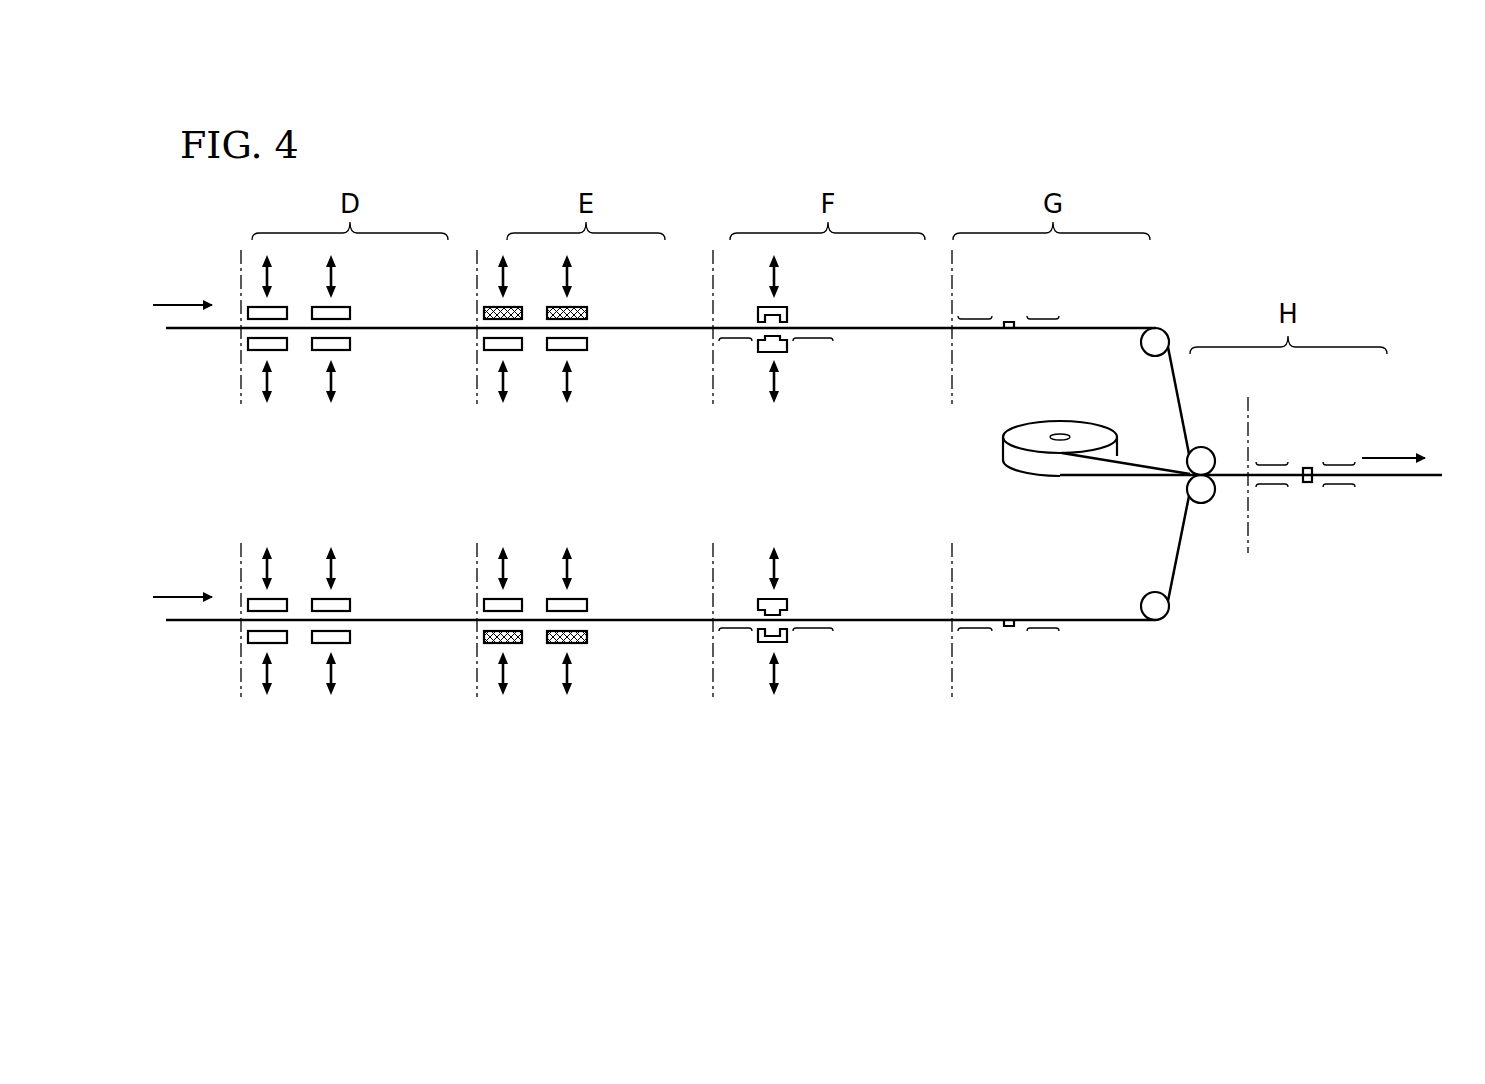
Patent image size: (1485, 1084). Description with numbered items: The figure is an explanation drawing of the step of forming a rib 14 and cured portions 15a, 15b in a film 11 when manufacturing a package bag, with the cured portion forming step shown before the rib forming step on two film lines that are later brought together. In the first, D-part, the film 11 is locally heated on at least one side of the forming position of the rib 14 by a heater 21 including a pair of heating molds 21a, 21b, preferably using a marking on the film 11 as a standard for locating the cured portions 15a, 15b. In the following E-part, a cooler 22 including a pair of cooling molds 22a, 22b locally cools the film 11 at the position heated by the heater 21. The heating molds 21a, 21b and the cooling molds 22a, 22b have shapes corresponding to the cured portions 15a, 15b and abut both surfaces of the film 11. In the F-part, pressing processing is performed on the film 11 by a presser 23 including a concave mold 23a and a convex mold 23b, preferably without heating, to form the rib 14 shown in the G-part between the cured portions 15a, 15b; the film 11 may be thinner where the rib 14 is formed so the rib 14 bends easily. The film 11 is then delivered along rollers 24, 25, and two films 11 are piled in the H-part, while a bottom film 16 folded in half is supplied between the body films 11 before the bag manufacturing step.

The film 11 is at (202, 330).
The rib 14 is at (1012, 321).
The cured portion 15a is at (735, 343).
The cured portion 15b is at (812, 340).
The bottom film 16 is at (1078, 466).
The heater 21 is at (345, 455).
The heating mold 21a is at (343, 313).
The heating mold 21b is at (343, 344).
The cooler 22 is at (582, 455).
The cooling mold 22a is at (582, 313).
The cooling mold 22b is at (582, 344).
The presser 23 is at (820, 476).
The concave mold 23a is at (787, 314).
The convex mold 23b is at (782, 348).
The roller 24 is at (1151, 346).
The roller 25 is at (1200, 458).